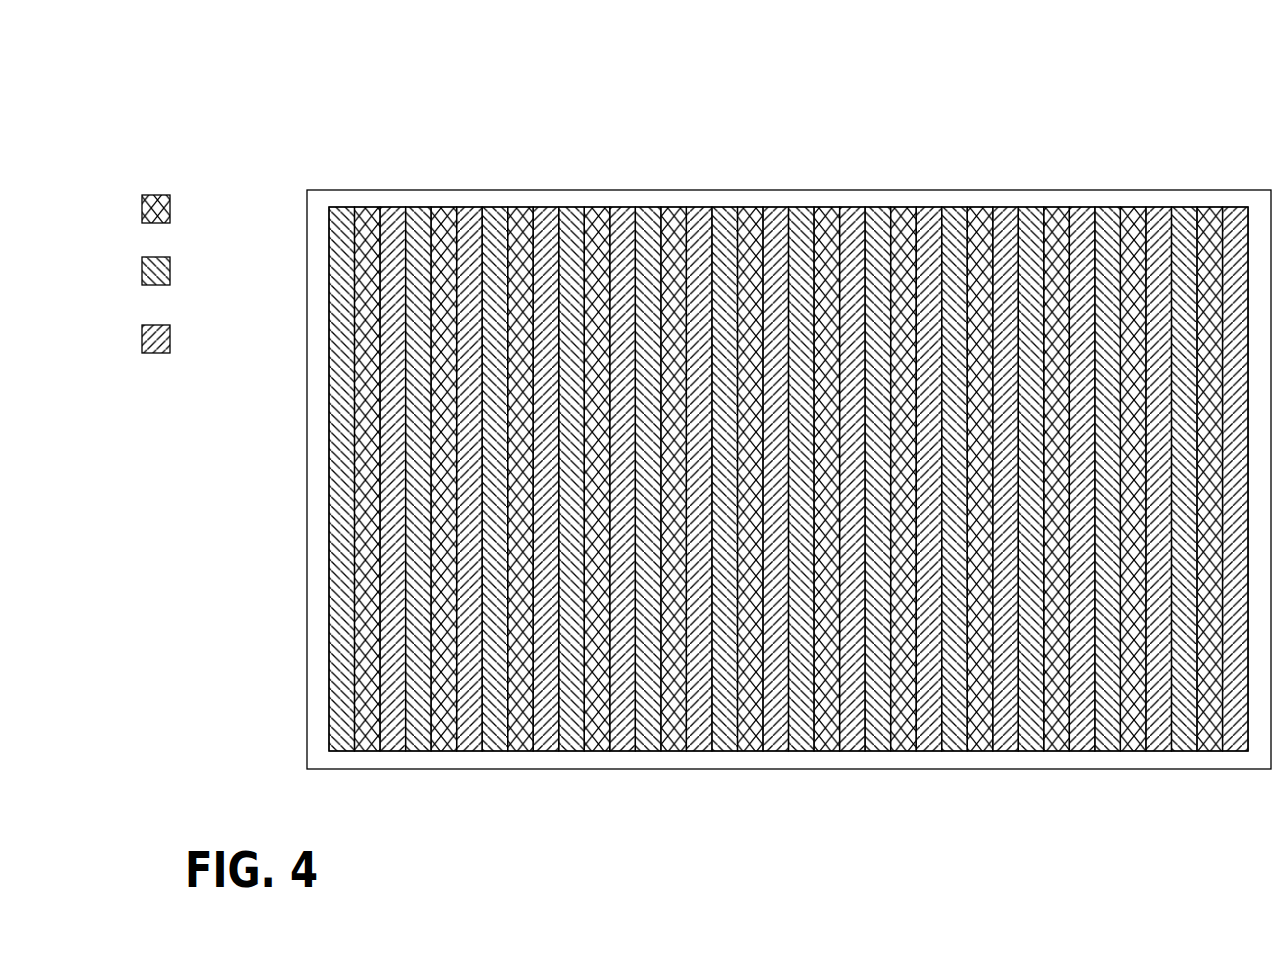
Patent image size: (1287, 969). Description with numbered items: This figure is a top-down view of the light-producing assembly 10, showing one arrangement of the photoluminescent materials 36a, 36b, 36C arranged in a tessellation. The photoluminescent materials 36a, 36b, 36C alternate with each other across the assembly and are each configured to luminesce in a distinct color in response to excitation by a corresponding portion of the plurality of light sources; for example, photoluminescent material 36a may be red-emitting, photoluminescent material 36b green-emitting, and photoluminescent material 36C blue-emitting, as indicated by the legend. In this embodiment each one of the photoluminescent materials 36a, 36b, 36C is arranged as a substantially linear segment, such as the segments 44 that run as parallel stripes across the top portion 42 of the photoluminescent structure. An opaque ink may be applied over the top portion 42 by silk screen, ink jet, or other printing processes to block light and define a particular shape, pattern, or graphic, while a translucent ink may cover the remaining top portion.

The light-producing assembly 10 is at (1167, 105).
The top portion 42 is at (788, 434).
The segments 44 is at (1203, 205).
The photoluminescent material 36a is at (142, 208).
The photoluminescent material 36b is at (142, 272).
The photoluminescent material 36C is at (142, 340).